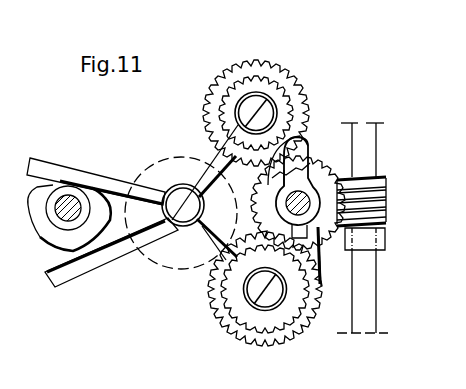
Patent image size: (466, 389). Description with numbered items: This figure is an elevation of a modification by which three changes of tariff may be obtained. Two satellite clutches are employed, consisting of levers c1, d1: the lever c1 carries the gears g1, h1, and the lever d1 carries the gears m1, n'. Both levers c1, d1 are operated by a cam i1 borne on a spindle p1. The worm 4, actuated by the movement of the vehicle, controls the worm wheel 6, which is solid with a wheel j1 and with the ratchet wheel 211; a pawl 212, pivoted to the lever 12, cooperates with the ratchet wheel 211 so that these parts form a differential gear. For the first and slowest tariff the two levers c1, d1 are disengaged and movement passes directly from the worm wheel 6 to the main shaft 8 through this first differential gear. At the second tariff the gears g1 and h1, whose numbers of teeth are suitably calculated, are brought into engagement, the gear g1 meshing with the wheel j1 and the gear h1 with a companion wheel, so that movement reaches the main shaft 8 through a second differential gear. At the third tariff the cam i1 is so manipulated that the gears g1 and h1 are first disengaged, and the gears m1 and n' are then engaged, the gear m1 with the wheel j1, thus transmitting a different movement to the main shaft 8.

The gear m1 is at (207, 124).
The gear g1 is at (228, 305).
The gear h1 is at (267, 299).
The lever d1 is at (155, 172).
The lever c1 is at (192, 208).
The spindle p1 is at (73, 196).
The cam i1 is at (52, 240).
The ratchet wheel 211 is at (327, 168).
The gear n' is at (298, 173).
The pawl 212 is at (297, 143).
The lever 12 is at (287, 184).
The main shaft 8 is at (290, 198).
The wheel j1 is at (330, 243).
The worm wheel 6 is at (325, 268).
The worm 4 is at (369, 228).